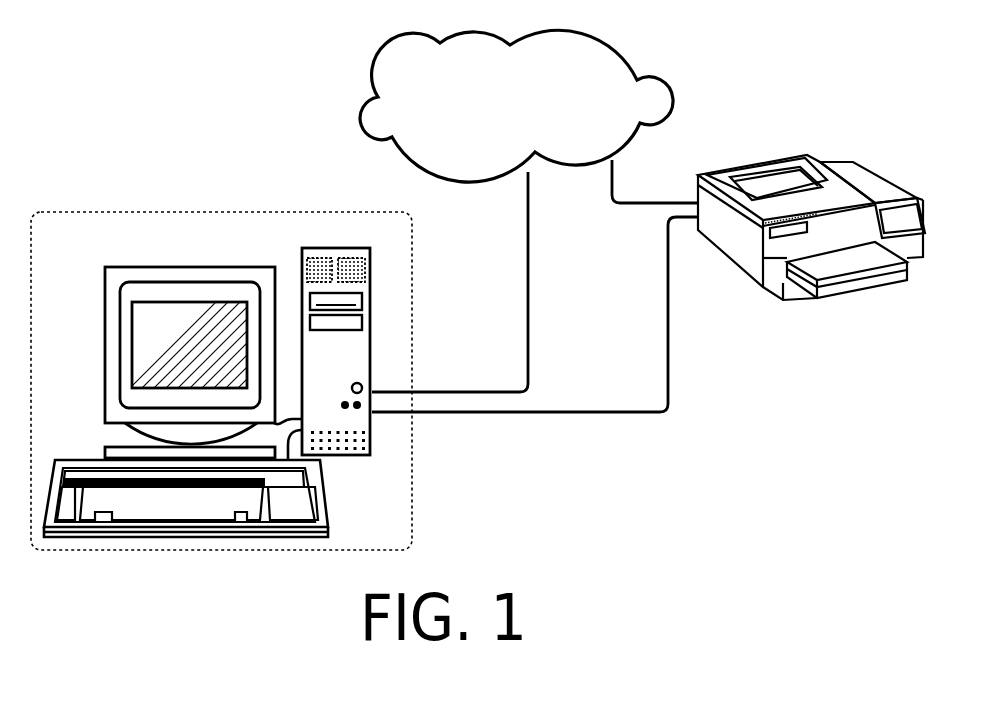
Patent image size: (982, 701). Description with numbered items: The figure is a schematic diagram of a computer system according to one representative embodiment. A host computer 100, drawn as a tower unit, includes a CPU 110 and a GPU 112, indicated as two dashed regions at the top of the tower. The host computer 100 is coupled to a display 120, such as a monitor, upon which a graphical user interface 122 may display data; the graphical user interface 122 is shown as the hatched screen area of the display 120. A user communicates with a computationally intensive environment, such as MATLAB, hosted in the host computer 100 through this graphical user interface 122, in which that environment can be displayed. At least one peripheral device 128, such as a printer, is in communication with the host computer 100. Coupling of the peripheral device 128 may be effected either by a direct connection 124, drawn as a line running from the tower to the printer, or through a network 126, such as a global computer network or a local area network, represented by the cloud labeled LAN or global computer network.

The host computer 100 is at (185, 203).
The CPU 110 is at (322, 258).
The GPU 112 is at (352, 258).
The display 120 is at (181, 267).
The graphical user interface 122 is at (149, 302).
The direct connection 124 is at (572, 412).
The network 126 is at (563, 33).
The peripheral device 128 is at (833, 162).